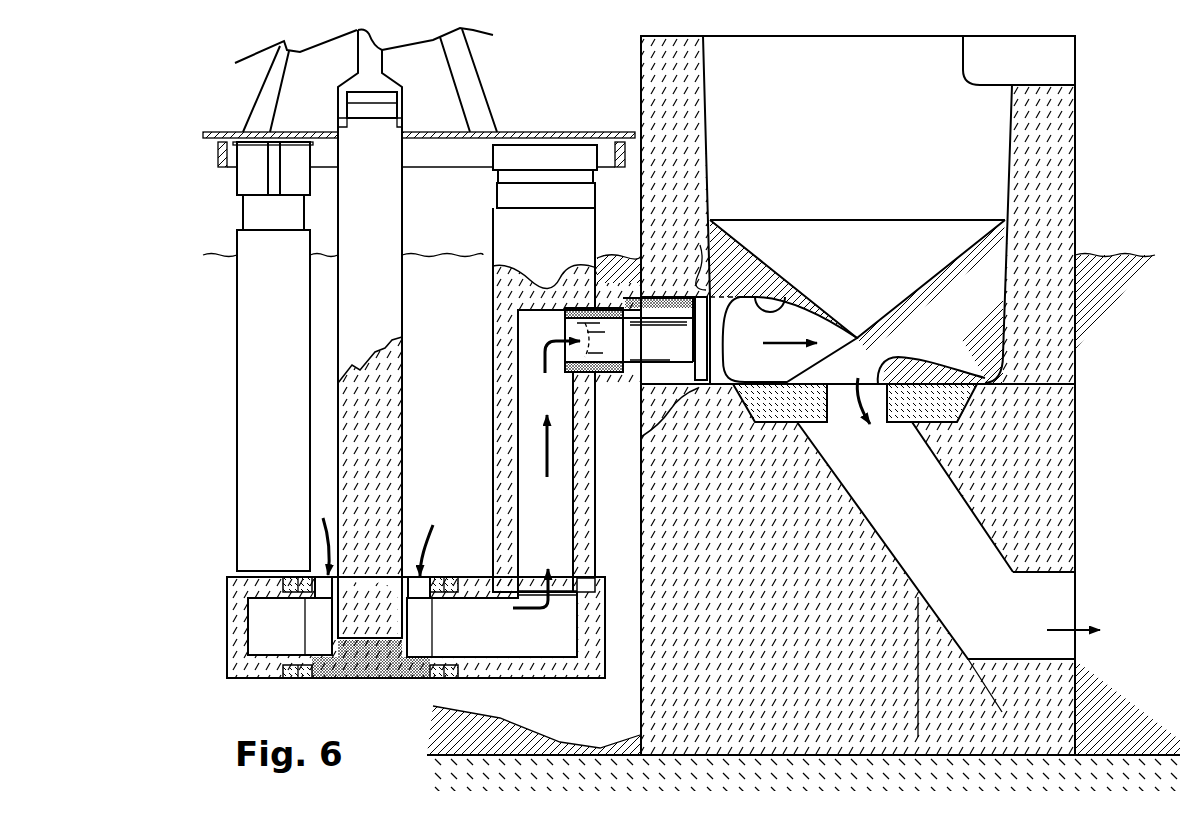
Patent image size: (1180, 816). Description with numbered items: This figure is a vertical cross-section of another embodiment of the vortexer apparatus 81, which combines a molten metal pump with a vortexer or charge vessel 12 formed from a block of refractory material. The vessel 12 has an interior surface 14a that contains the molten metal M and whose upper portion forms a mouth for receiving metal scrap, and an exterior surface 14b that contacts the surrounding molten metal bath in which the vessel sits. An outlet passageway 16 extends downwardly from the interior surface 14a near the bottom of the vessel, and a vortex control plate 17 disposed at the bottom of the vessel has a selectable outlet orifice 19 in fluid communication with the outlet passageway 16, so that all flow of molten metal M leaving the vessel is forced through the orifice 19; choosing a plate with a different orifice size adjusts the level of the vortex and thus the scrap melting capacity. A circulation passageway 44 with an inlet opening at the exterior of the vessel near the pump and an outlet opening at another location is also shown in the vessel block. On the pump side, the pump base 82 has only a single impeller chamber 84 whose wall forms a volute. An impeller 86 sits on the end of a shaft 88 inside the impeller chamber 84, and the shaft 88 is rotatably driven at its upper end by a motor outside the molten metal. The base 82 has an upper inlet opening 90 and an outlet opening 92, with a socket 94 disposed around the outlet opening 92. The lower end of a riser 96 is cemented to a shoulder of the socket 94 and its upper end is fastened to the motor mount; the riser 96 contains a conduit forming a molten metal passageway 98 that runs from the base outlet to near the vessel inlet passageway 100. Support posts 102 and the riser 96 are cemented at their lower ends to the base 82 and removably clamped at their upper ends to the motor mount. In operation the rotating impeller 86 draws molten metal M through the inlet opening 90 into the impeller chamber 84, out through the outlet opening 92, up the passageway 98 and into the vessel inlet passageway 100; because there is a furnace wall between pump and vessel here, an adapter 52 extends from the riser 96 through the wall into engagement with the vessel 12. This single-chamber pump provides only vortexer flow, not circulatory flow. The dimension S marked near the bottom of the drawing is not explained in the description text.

The charge vessel 12 is at (1048, 145).
The interior surface 14a is at (707, 120).
The exterior surface 14b is at (640, 728).
The outlet passageway 16 is at (1028, 520).
The vortex control plate 17 is at (947, 403).
The outlet orifice 19 is at (953, 373).
The circulation passageway 44 is at (1030, 490).
The adapter 52 is at (623, 300).
The vortexer apparatus 81 is at (1163, 207).
The pump base 82 is at (497, 670).
The impeller chamber 84 is at (270, 634).
The impeller 86 is at (375, 662).
The shaft 88 is at (373, 430).
The inlet opening 90 is at (452, 538).
The outlet opening 92 is at (525, 655).
The socket 94 is at (583, 583).
The riser 96 is at (585, 432).
The molten metal passageway 98 is at (520, 413).
The vessel inlet passageway 100 is at (786, 300).
The support posts 102 is at (283, 505).
The molten metal M is at (760, 253).
The offset distance S is at (986, 705).